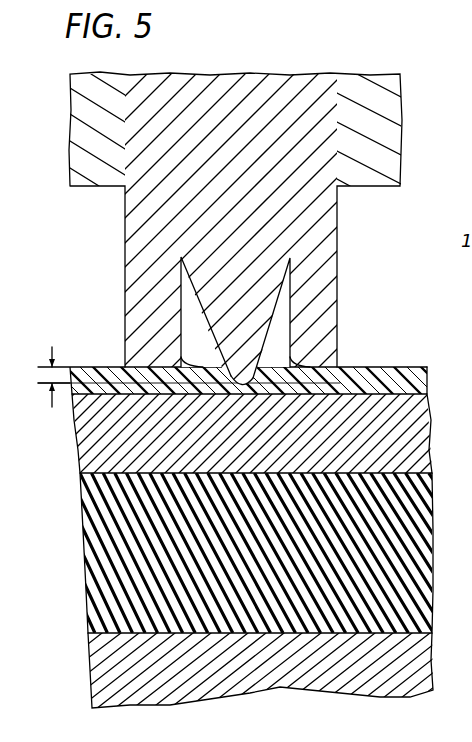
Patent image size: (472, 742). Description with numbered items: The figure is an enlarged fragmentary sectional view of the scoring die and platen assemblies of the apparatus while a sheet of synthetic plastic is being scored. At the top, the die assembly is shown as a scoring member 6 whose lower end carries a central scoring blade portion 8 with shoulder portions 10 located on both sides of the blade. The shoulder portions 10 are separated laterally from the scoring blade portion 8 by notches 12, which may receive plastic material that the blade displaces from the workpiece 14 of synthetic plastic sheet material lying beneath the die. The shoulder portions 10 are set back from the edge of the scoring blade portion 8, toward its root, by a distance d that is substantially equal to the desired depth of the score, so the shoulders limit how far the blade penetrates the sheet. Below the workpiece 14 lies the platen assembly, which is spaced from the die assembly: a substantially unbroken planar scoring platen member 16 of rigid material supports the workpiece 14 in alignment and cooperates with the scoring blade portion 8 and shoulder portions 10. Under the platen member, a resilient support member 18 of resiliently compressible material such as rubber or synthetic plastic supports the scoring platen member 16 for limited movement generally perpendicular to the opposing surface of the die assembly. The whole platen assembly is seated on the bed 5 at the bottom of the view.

The bed 5 is at (95, 678).
The scoring member 6 is at (259, 283).
The scoring blade portion 8 is at (224, 392).
The shoulder portions 10 is at (133, 376).
The notches 12 is at (284, 326).
The workpiece 14 is at (398, 367).
The scoring platen member 16 is at (88, 457).
The resilient support member 18 is at (92, 558).
The distance d is at (54, 366).